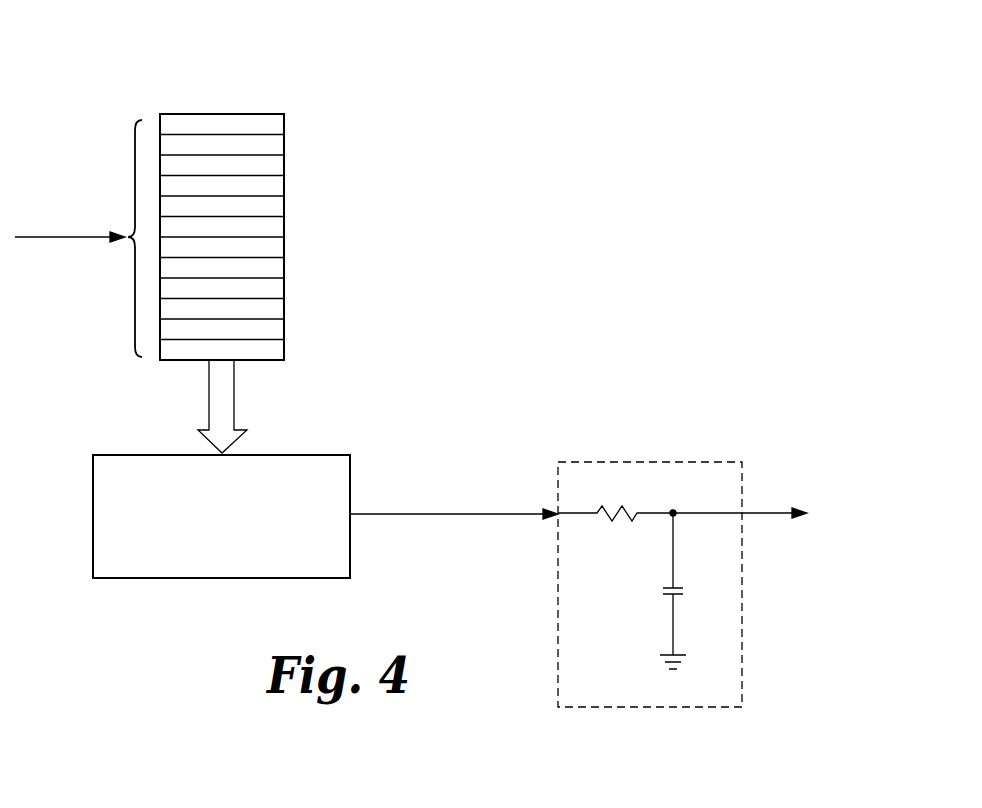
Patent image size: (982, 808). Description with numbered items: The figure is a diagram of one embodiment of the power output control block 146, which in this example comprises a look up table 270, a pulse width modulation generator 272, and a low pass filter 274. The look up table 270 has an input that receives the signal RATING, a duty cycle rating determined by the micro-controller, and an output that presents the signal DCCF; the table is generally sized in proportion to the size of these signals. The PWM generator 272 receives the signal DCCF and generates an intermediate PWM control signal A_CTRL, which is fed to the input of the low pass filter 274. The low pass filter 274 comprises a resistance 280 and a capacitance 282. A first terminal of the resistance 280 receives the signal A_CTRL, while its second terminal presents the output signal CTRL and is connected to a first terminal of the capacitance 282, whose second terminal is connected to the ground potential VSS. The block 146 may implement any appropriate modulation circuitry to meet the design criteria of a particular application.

The power output control block 146 is at (418, 124).
The look up table 270 is at (284, 157).
The pulse width modulation generator 272 is at (313, 455).
The low pass filter 274 is at (692, 462).
The resistance 280 is at (597, 513).
The capacitance 282 is at (670, 596).